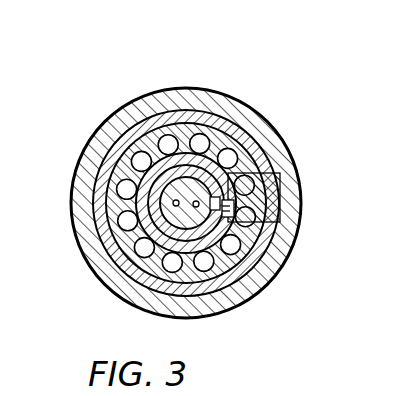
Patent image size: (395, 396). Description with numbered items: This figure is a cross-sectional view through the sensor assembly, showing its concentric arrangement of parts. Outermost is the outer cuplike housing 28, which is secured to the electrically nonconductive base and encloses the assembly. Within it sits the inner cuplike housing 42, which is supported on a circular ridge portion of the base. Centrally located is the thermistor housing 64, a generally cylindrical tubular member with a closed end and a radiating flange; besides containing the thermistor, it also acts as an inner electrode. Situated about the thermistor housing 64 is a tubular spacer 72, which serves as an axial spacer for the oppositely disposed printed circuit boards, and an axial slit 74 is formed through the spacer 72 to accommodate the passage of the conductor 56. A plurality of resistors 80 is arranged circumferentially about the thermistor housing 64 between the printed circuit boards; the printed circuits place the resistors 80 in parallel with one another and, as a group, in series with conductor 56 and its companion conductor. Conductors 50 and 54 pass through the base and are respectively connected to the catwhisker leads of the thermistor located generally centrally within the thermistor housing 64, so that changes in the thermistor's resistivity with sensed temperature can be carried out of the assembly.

The outer cuplike housing 28 is at (212, 93).
The inner cuplike housing 42 is at (152, 100).
The resistors 80 is at (162, 148).
The thermistor housing 64 is at (204, 247).
The conductor 50 is at (162, 216).
The axial slit 74 is at (258, 191).
The tubular spacer 72 is at (172, 203).
The conductor 54 is at (238, 174).
The conductor 56 is at (236, 219).